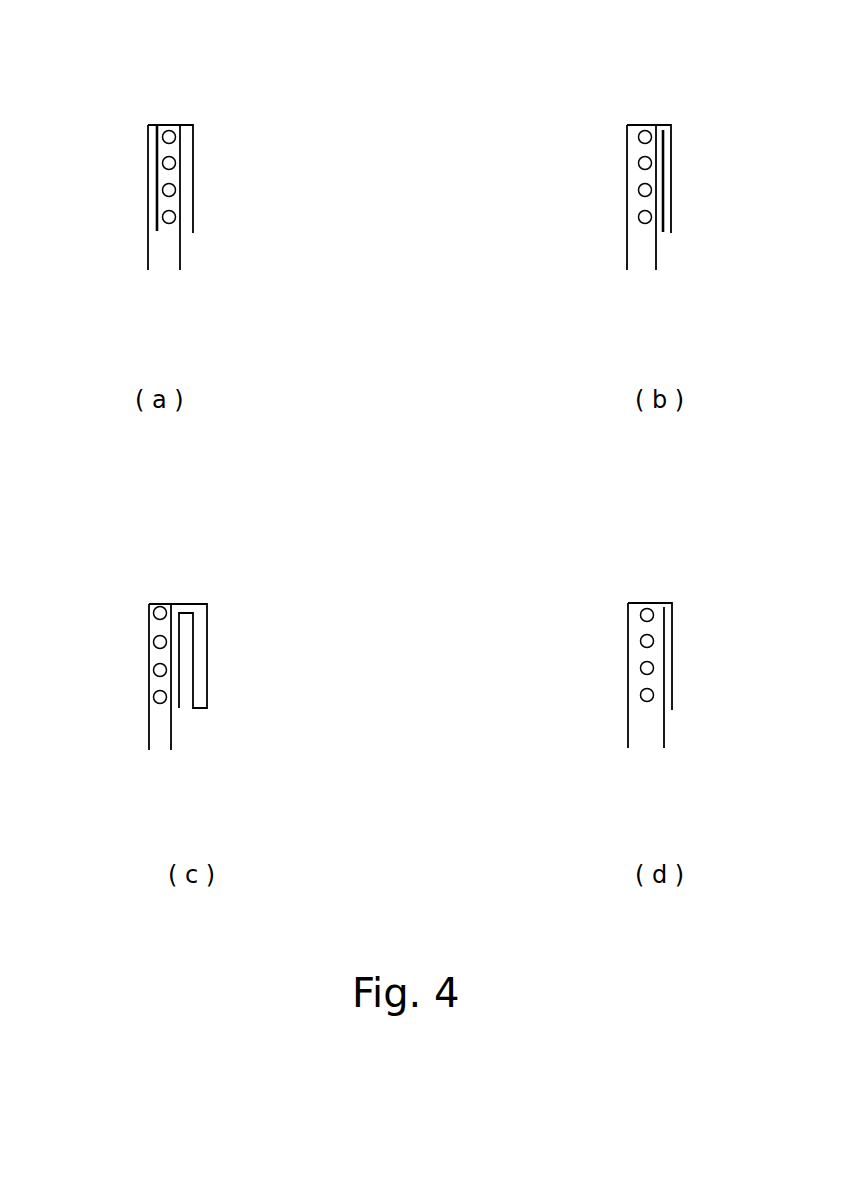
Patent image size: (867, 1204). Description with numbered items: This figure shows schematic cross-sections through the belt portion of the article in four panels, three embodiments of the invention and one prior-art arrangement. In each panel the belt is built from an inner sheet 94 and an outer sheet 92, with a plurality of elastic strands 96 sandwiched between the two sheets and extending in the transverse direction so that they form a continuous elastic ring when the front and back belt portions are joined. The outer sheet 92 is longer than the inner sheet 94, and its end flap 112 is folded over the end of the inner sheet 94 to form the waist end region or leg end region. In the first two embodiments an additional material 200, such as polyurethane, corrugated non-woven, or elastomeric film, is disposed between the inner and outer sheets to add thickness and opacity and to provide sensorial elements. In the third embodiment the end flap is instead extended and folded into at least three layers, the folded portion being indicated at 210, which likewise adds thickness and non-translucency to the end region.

The outer sheet 92 is at (148, 253).
The inner sheet 94 is at (180, 253).
The elastic strands 96 is at (165, 137).
The end flap 112 is at (193, 140).
The additional material 200 is at (155, 198).
The folded cover portion 210 is at (201, 716).